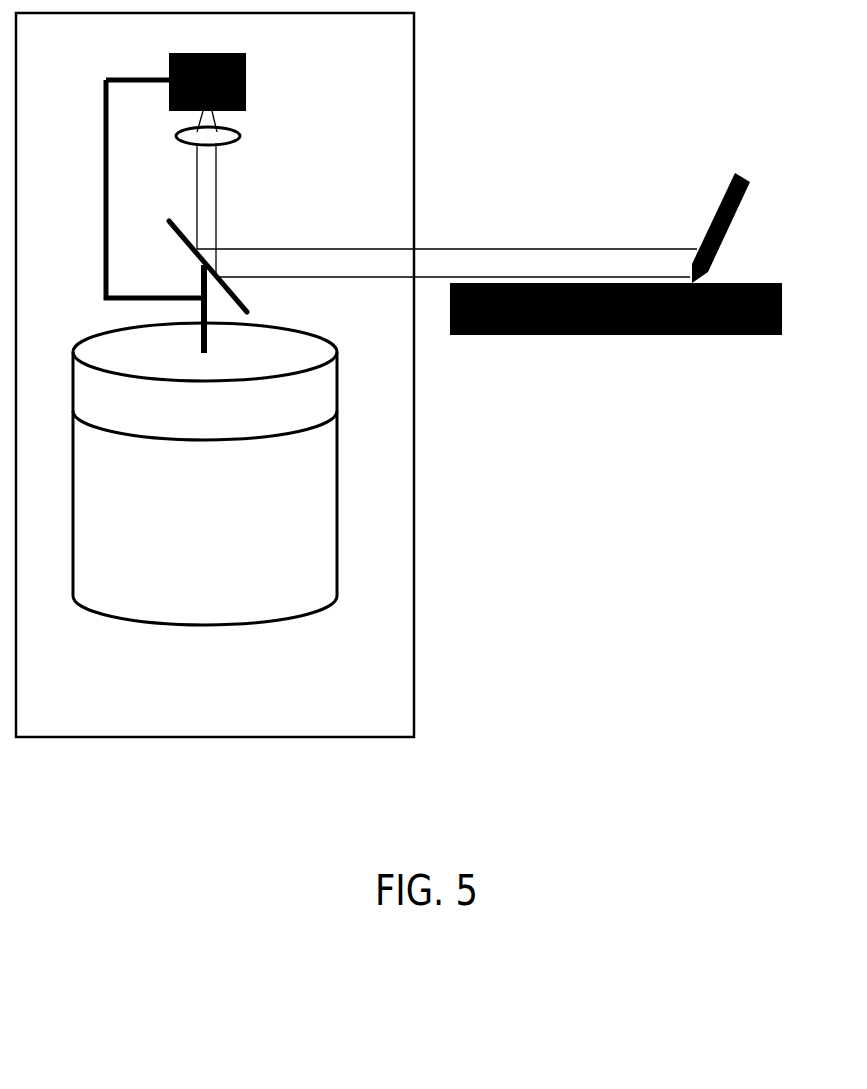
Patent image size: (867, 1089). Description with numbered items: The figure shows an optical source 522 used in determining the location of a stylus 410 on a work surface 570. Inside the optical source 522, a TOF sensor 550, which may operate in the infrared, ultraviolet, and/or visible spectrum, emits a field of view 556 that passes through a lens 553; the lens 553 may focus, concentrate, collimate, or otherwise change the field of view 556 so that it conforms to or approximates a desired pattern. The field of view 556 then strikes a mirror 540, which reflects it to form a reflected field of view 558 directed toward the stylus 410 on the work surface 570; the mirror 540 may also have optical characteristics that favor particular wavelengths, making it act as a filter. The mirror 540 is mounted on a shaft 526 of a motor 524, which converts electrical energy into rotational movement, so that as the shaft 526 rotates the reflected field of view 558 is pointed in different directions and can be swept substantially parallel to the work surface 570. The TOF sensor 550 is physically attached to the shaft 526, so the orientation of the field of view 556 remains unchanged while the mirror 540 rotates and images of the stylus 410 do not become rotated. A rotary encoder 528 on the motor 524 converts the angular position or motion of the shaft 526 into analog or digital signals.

The stylus 410 is at (717, 195).
The optical source 522 is at (422, 513).
The motor 524 is at (162, 633).
The shaft 526 is at (198, 347).
The rotary encoder 528 is at (345, 373).
The mirror 540 is at (248, 302).
The TOF sensor 550 is at (255, 70).
The lens 553 is at (248, 128).
The field of view 556 is at (220, 182).
The reflected field of view 558 is at (490, 242).
The work surface 570 is at (648, 340).